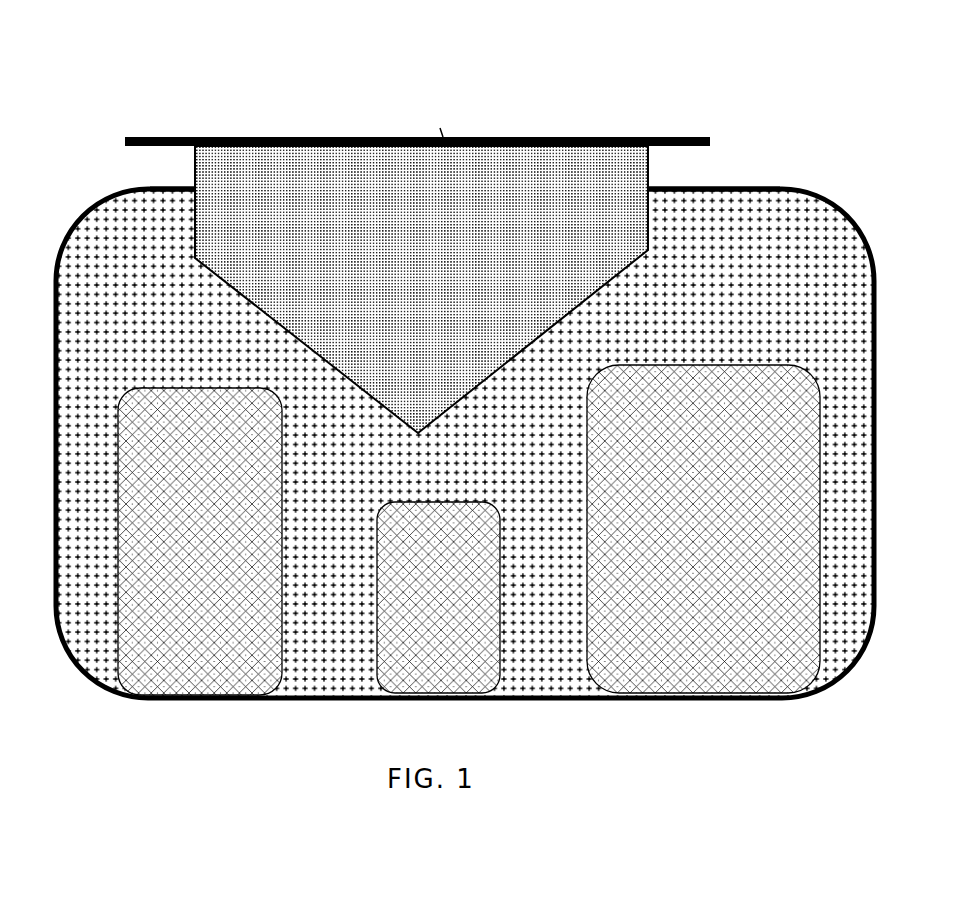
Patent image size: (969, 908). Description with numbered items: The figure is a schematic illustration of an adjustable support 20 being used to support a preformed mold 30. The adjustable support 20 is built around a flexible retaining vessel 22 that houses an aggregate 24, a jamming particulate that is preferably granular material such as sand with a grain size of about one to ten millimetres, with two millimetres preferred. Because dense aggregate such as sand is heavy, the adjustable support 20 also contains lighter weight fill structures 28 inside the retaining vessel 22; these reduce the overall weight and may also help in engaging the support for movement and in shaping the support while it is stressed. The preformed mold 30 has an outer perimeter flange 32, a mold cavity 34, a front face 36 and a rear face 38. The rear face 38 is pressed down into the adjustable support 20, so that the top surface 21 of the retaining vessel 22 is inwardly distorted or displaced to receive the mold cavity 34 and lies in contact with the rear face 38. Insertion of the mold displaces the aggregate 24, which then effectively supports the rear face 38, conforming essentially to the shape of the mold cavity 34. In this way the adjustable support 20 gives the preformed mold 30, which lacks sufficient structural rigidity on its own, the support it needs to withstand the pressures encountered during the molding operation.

The adjustable support 20 is at (479, 453).
The top surface 21 is at (695, 189).
The retaining vessel 22 is at (877, 580).
The aggregate 24 is at (728, 226).
The lighter weight fill structures 28 is at (220, 663).
The preformed mold 30 is at (455, 413).
The outer perimeter flange 32 is at (682, 140).
The mold cavity 34 is at (342, 137).
The front face 36 is at (443, 137).
The rear face 38 is at (371, 418).